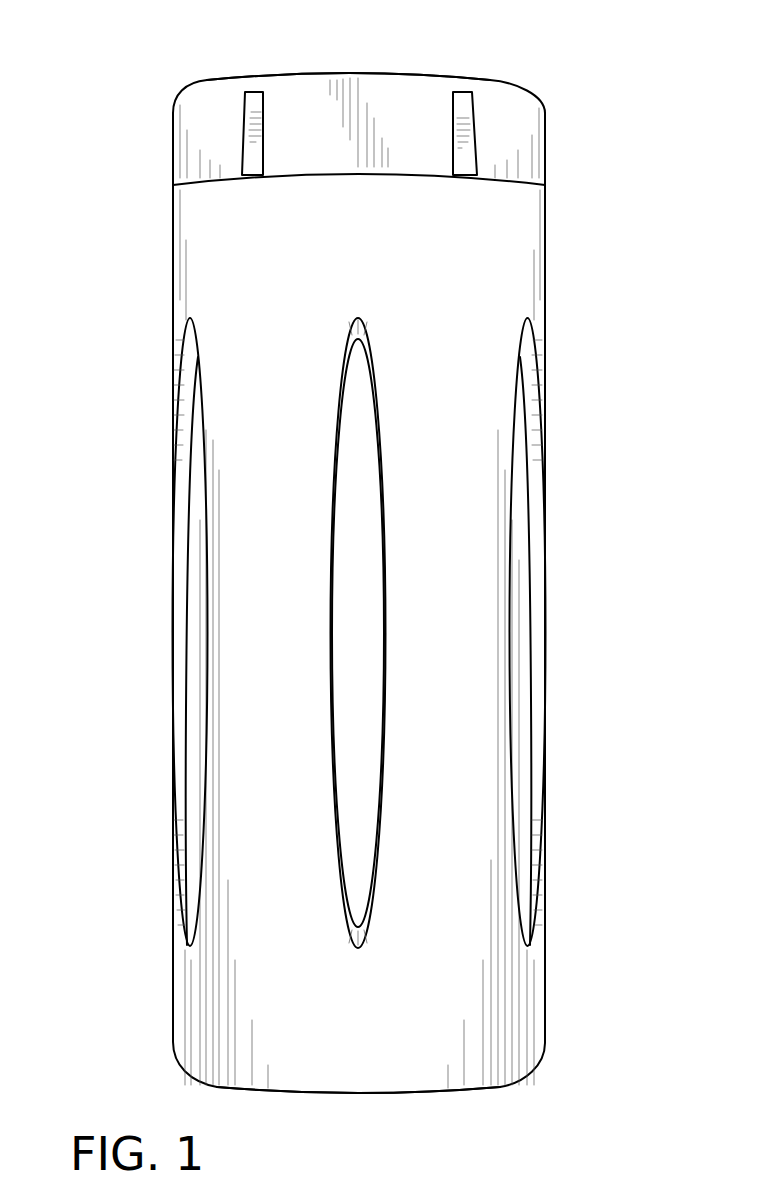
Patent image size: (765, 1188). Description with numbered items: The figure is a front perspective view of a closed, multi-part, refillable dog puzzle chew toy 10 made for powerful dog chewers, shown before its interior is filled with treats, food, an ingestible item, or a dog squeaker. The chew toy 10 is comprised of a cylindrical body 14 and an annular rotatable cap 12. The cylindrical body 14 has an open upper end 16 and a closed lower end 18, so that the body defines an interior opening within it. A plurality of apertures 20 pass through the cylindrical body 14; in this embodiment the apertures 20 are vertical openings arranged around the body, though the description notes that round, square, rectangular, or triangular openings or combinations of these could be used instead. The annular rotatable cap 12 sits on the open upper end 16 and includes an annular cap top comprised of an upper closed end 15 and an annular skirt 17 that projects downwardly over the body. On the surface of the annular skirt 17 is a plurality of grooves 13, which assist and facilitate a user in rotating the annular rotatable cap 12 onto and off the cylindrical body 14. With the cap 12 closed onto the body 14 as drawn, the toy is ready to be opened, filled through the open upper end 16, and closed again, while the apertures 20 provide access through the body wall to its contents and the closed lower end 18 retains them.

The dog puzzle chew toy 10 is at (127, 75).
The annular rotatable cap 12 is at (193, 143).
The grooves 13 is at (468, 142).
The cylindrical body 14 is at (523, 273).
The upper closed end 15 is at (387, 72).
The open upper end 16 is at (172, 186).
The annular skirt 17 is at (547, 165).
The closed lower end 18 is at (528, 1072).
The apertures 20 is at (197, 605).